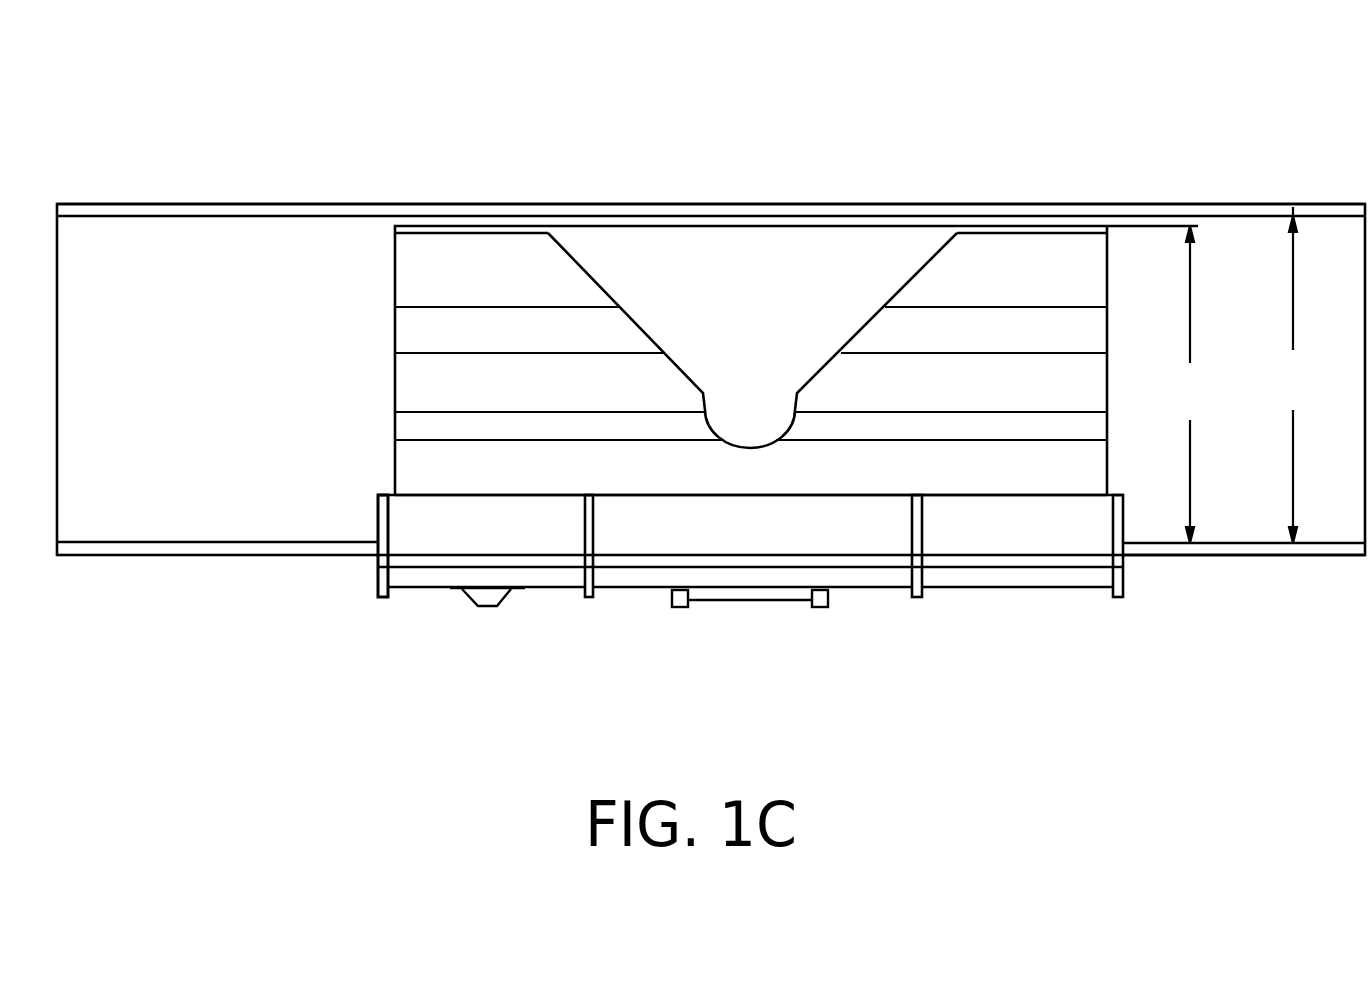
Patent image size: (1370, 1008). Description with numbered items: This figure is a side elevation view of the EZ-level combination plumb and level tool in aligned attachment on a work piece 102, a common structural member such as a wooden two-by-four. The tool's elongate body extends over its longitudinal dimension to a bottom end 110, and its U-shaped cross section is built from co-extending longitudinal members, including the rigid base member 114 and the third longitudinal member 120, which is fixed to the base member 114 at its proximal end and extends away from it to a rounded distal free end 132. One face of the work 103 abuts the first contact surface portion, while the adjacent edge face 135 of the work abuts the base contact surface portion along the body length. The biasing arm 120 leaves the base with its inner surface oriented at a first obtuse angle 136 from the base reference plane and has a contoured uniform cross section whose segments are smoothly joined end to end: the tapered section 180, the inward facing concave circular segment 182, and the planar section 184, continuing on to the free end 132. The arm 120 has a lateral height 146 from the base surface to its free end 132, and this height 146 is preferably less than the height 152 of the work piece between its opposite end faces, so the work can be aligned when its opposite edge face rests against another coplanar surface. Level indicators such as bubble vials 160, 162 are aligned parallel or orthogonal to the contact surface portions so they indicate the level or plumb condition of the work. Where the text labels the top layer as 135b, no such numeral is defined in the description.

The work piece 102 is at (191, 404).
The work 103 is at (377, 567).
The bottom end 110 is at (1123, 594).
The second rigid longitudinal member 114 is at (1057, 590).
The third longitudinal member 120 is at (395, 353).
The distal free end 132 is at (477, 226).
The edge face 135 is at (1215, 557).
The upper layer 135b is at (1166, 205).
The first obtuse angle 136 is at (1011, 298).
The lateral height 146 is at (1185, 384).
The height of the work piece 152 is at (1288, 375).
The bubble vial 160 is at (778, 602).
The bubble vial 162 is at (475, 607).
The tapered section 180 is at (1037, 488).
The concave circular segment 182 is at (1040, 407).
The planar section 184 is at (751, 334).